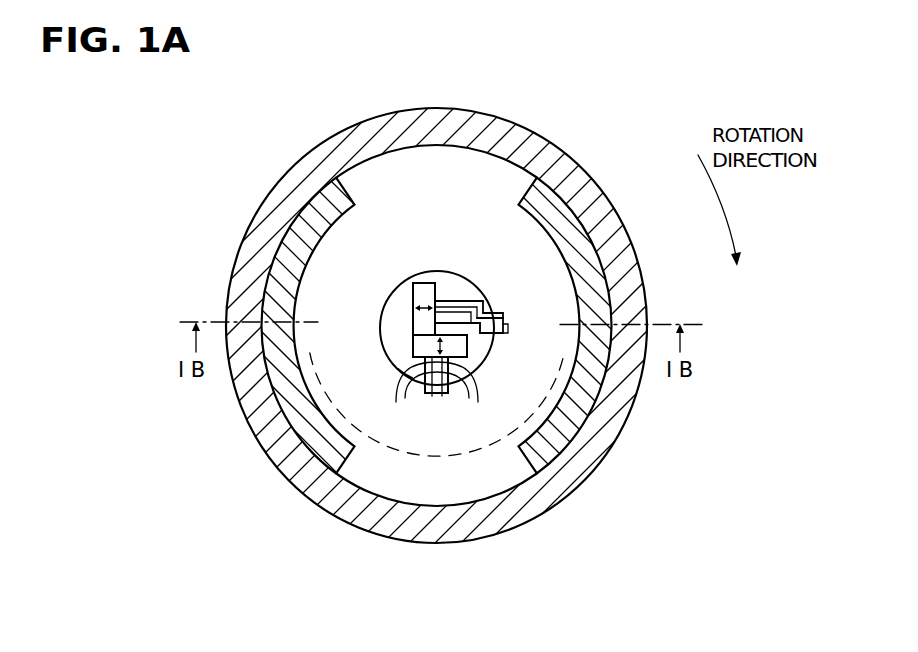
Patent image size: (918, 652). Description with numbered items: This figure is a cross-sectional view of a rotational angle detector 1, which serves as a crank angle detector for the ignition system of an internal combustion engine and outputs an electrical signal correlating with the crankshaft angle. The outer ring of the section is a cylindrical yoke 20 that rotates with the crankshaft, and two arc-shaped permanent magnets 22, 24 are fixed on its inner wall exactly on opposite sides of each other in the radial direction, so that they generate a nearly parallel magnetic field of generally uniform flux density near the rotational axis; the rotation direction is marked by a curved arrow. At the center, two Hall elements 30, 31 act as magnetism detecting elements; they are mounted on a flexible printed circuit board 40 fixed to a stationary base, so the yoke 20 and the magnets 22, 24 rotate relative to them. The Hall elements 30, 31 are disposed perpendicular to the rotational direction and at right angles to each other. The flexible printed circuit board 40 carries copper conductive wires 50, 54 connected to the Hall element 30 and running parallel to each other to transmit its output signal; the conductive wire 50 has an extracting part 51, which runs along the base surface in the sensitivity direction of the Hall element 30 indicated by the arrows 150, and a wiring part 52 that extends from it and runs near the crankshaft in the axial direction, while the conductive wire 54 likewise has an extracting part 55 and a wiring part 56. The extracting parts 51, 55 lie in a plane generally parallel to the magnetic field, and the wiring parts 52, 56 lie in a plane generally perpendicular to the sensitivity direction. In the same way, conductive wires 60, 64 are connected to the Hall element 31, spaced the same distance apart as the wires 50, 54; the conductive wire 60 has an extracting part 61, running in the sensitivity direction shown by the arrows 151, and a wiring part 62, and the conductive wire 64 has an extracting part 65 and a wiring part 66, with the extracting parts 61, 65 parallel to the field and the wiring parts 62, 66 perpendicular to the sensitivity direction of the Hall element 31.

The rotational angle detector 1 is at (709, 89).
The cylindrical yoke 20 is at (440, 113).
The permanent magnet 22 is at (323, 197).
The permanent magnet 24 is at (530, 466).
The Hall element 30 is at (428, 292).
The Hall element 31 is at (410, 364).
The flexible printed circuit board 40 is at (387, 300).
The conductive wire 50 is at (481, 291).
The extracting part 51 is at (457, 299).
The wiring part 52 is at (505, 318).
The conductive wire 54 is at (482, 338).
The extracting part 55 is at (484, 338).
The wiring part 56 is at (509, 332).
The conductive wire 60 is at (478, 402).
The extracting part 61 is at (478, 386).
The wiring part 62 is at (442, 398).
The conductive wire 64 is at (396, 402).
The extracting part 65 is at (408, 377).
The wiring part 66 is at (432, 398).
The arrows 150 is at (425, 305).
The arrows 151 is at (413, 346).